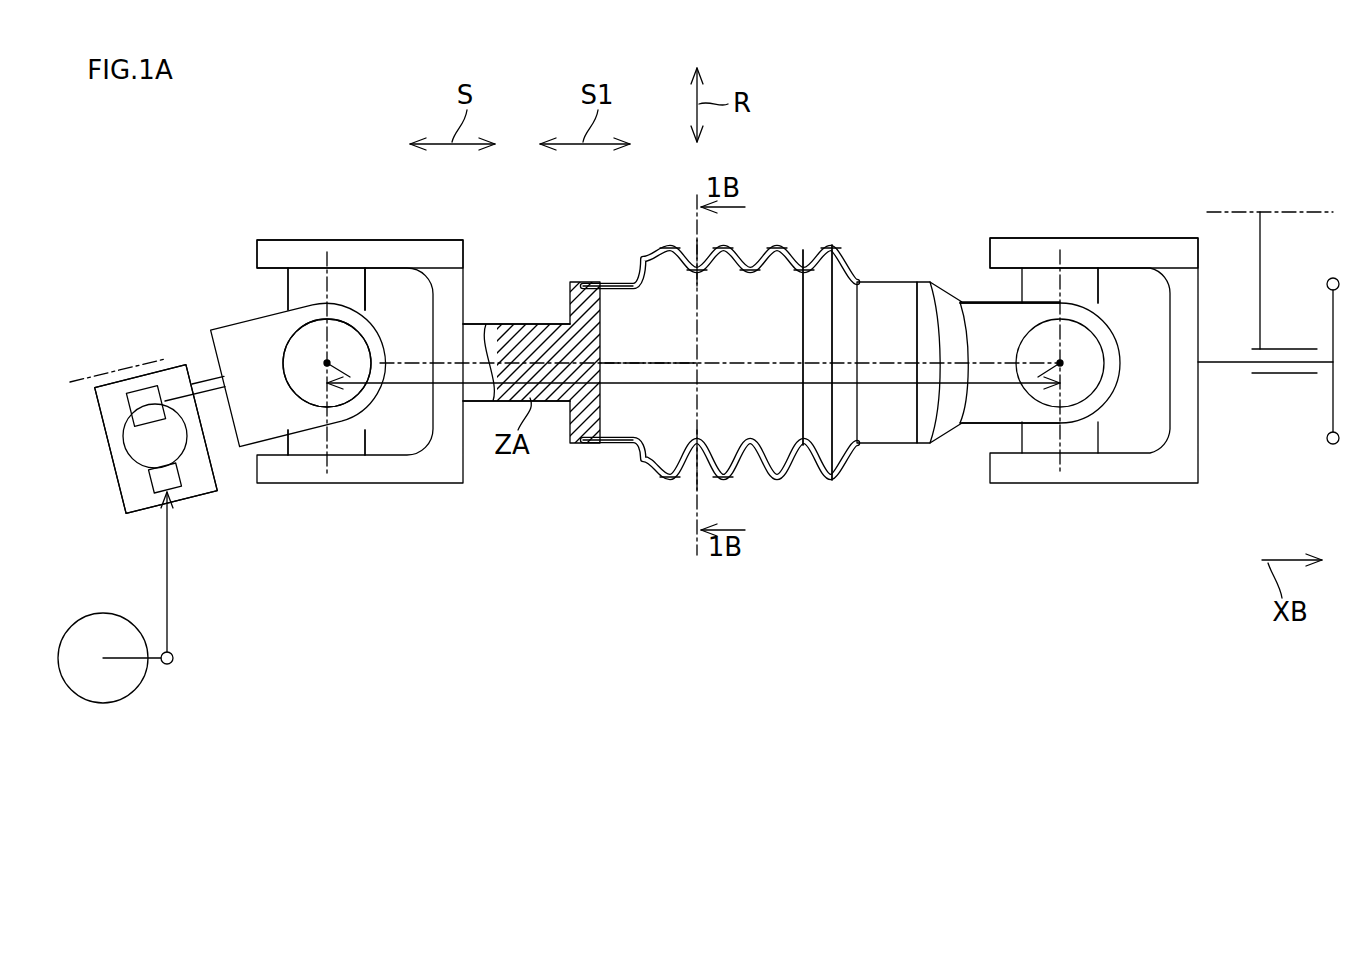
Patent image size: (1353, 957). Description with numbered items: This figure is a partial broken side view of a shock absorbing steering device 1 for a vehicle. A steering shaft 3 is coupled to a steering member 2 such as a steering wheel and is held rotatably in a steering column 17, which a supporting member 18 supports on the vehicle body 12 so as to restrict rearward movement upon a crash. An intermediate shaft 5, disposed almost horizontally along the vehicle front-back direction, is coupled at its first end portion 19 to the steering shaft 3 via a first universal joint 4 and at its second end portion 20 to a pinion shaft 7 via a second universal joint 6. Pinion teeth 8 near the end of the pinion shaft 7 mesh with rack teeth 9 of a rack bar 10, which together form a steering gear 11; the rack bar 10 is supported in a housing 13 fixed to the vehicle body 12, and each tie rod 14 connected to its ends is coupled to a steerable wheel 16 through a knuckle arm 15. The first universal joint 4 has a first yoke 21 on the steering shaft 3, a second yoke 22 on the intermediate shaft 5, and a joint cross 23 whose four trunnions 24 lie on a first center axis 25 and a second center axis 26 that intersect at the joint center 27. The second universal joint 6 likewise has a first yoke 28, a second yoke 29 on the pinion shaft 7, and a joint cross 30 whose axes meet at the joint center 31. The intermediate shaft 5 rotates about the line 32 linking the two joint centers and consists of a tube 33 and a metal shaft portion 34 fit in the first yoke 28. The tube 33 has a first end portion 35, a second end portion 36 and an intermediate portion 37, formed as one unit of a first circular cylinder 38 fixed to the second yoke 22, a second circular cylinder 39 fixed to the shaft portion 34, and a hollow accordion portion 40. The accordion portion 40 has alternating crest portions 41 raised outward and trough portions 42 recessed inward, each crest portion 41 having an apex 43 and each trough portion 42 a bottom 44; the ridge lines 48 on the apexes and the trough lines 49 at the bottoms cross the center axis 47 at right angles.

The shock absorbing steering device 1 is at (986, 140).
The steering member 2 is at (1332, 413).
The steering shaft 3 is at (1272, 365).
The first universal joint 4 is at (1062, 507).
The intermediate shaft 5 is at (578, 258).
The second universal joint 6 is at (327, 507).
The pinion shaft 7 is at (196, 383).
The pinion teeth 8 is at (142, 456).
The rack teeth 9 is at (133, 408).
The rack bar 10 is at (140, 466).
The steering gear 11 is at (197, 513).
The vehicle body 12 is at (165, 359).
The housing 13 is at (137, 512).
The tie rod 14 is at (167, 620).
The knuckle arm 15 is at (152, 665).
The steerable wheel 16 is at (103, 703).
The steering column 17 is at (1283, 348).
The supporting member 18 is at (1262, 243).
The first end portion 19 is at (902, 280).
The second end portion 20 is at (475, 322).
The first yoke 21 is at (1130, 240).
The second yoke 22 is at (977, 320).
The joint cross 23 is at (1103, 295).
The trunnion 24 is at (290, 273).
The first center axis 25 is at (328, 275).
The second center axis 26 is at (323, 366).
The joint center 27 is at (1062, 366).
The first yoke 28 is at (393, 240).
The second yoke 29 is at (242, 320).
The joint cross 30 is at (368, 296).
The joint center 31 is at (330, 366).
The line 32 is at (962, 423).
The tube 33 is at (656, 262).
The shaft portion 34 is at (523, 323).
The first end portion 35 is at (928, 447).
The second end portion 36 is at (585, 443).
The intermediate portion 37 is at (727, 478).
The first circular cylinder 38 is at (880, 280).
The second circular cylinder 39 is at (622, 447).
The accordion portion 40 is at (663, 478).
The crest portion 41 is at (668, 247).
The trough portion 42 is at (696, 270).
The apex 43 is at (830, 482).
The bottom 44 is at (800, 453).
The center axis 47 is at (630, 358).
The ridge line 48 is at (834, 315).
The trough line 49 is at (800, 327).